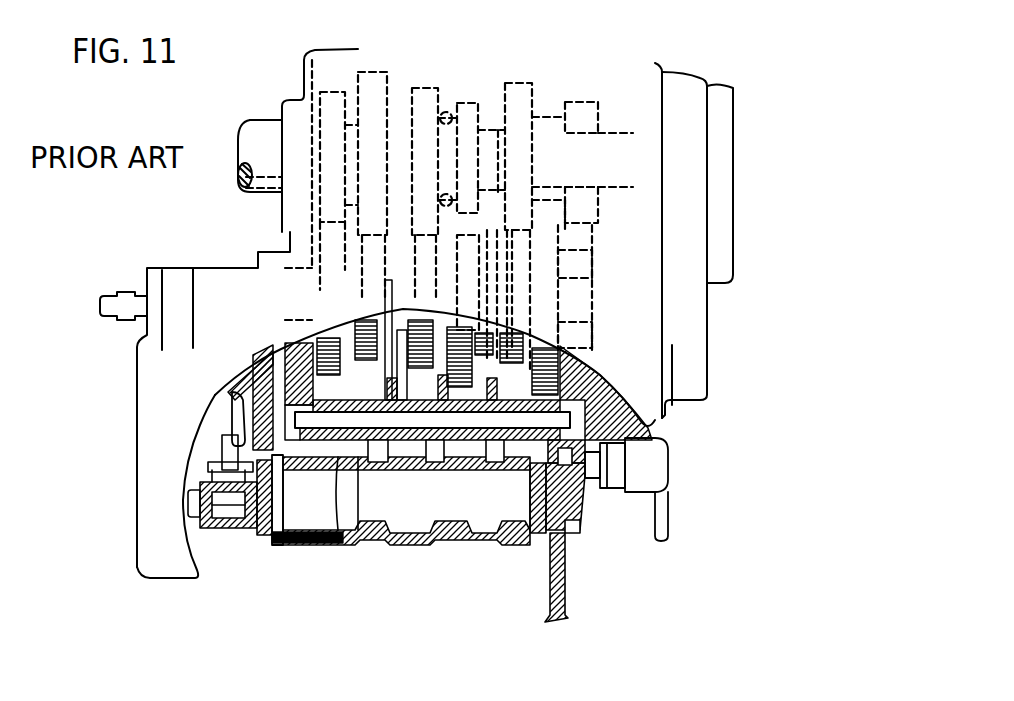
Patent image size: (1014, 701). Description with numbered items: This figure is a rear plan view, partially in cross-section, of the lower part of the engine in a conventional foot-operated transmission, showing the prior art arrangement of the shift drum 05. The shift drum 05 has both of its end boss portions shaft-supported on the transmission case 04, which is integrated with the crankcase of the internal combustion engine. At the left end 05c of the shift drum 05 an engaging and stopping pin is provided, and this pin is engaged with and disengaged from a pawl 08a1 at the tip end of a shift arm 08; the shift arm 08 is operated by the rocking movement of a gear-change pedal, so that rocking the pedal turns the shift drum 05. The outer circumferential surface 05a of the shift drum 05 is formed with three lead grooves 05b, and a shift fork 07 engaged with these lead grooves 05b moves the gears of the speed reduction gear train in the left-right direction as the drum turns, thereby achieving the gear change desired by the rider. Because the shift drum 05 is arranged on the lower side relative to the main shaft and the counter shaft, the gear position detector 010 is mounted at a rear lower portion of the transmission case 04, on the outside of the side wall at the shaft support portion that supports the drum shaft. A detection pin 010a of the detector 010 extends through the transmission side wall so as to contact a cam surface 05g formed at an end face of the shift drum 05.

The transmission case 04 is at (565, 573).
The shift drum 05 is at (445, 540).
The outer circumferential surface 05a is at (475, 517).
The lead grooves 05b is at (450, 540).
The left end of the shift drum 05c is at (258, 548).
The cam surface 05g is at (533, 538).
The shift fork 07 is at (440, 410).
The shift arm 08 is at (225, 410).
The pawl 08a1 is at (200, 505).
The gear position detector 010 is at (645, 477).
The detection pin 010a is at (583, 497).